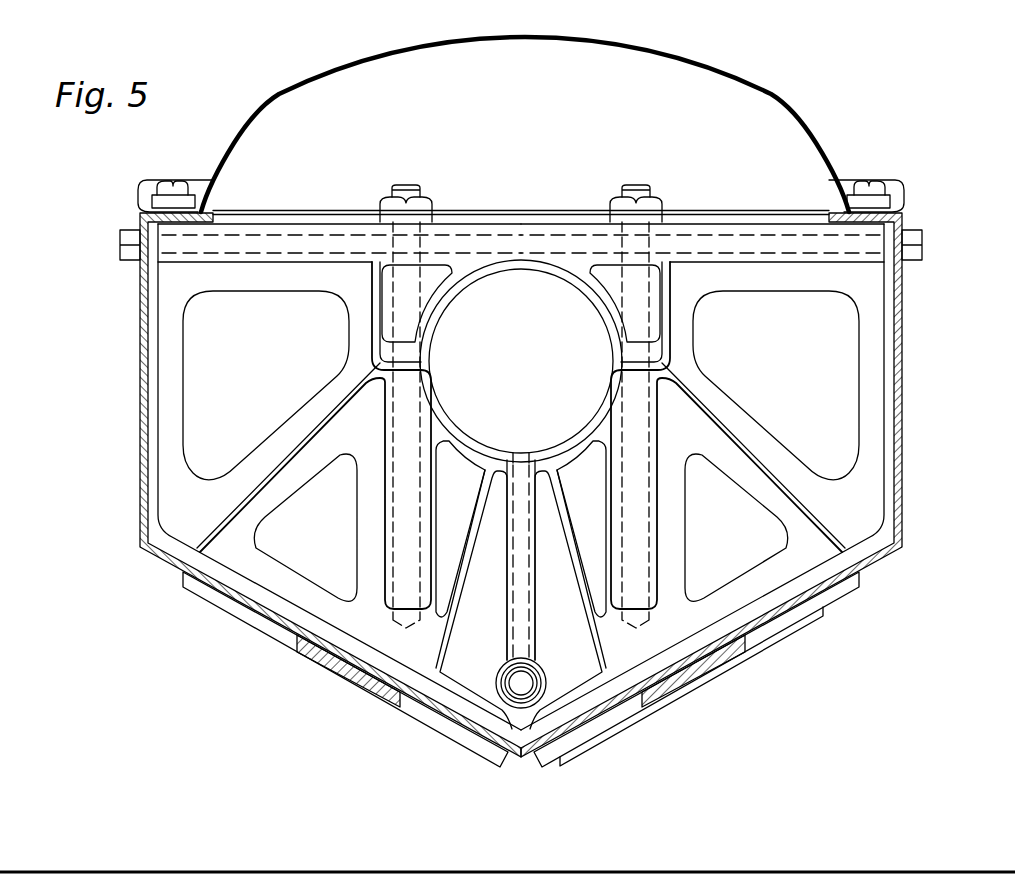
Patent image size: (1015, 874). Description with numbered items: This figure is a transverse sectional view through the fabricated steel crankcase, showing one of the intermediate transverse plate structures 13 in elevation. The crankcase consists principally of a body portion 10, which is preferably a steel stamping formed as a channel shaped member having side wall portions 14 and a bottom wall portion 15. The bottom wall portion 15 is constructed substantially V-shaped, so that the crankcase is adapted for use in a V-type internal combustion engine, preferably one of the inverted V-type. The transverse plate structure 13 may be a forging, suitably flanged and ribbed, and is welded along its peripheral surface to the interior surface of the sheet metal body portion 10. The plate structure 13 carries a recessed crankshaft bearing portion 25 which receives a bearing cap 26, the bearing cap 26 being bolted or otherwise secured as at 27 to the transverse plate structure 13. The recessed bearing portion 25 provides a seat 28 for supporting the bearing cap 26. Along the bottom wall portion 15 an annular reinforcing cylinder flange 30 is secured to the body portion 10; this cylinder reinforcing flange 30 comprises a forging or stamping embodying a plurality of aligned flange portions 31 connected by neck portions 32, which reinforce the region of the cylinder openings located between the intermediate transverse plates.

The body portion 10 is at (904, 311).
The intermediate transverse plate structure 13 is at (870, 404).
The side wall portion 14 is at (139, 330).
The bottom wall portion 15 is at (545, 744).
The recessed crankshaft bearing portion 25 is at (368, 318).
The bearing cap 26 is at (479, 270).
The bolt 27 is at (418, 193).
The seat 28 is at (414, 368).
The annular reinforcing cylinder flange 30 is at (290, 647).
The aligned flange portion 31 is at (773, 640).
The neck portion 32 is at (737, 665).